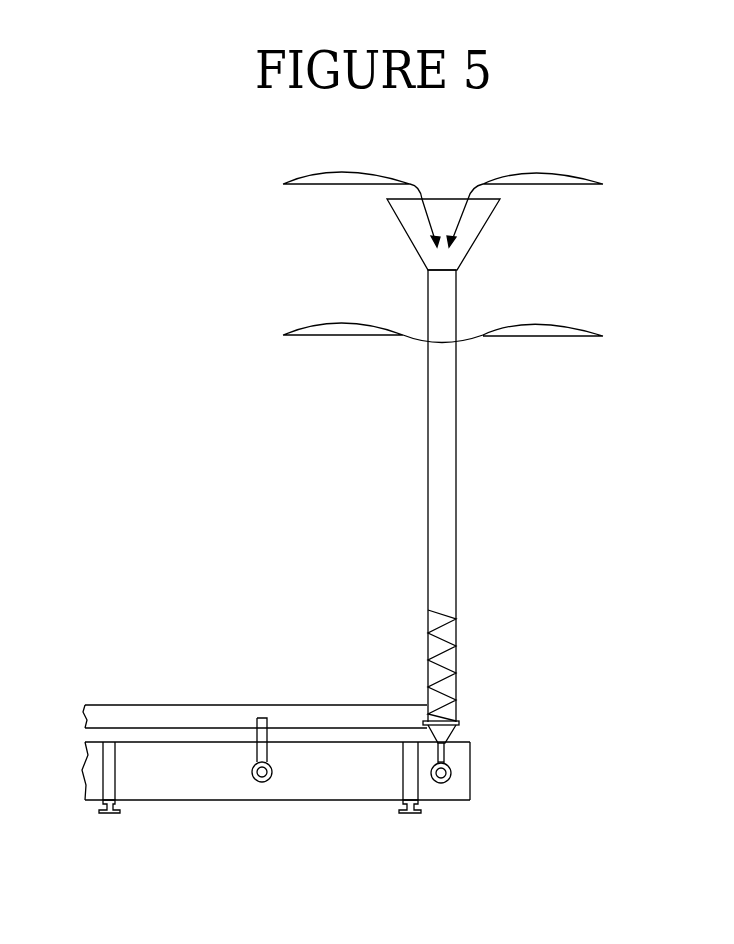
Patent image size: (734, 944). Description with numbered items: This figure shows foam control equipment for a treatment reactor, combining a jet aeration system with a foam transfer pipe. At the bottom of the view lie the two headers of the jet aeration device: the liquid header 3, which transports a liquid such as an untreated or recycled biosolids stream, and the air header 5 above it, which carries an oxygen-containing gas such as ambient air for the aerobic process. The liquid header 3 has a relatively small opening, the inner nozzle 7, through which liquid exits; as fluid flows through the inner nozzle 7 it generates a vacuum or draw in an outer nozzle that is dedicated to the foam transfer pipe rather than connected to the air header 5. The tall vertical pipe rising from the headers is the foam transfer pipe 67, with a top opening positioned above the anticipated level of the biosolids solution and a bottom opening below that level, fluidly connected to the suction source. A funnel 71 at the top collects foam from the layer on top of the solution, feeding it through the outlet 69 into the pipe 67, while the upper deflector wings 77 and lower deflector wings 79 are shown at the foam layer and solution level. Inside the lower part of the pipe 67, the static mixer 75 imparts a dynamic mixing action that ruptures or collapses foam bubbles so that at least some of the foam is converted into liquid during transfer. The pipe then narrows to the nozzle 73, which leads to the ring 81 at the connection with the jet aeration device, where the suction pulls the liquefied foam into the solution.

The liquid header 3 is at (163, 800).
The air header 5 is at (180, 705).
The inner nozzle 7 is at (441, 783).
The tube 67 is at (456, 462).
The funnel outlet 69 is at (457, 270).
The funnel 71 is at (483, 227).
The nozzle 73 is at (447, 755).
The spring 75 is at (456, 668).
The upper deflector wings 77 is at (603, 184).
The lower deflector wings 79 is at (603, 336).
The ring 81 is at (451, 772).